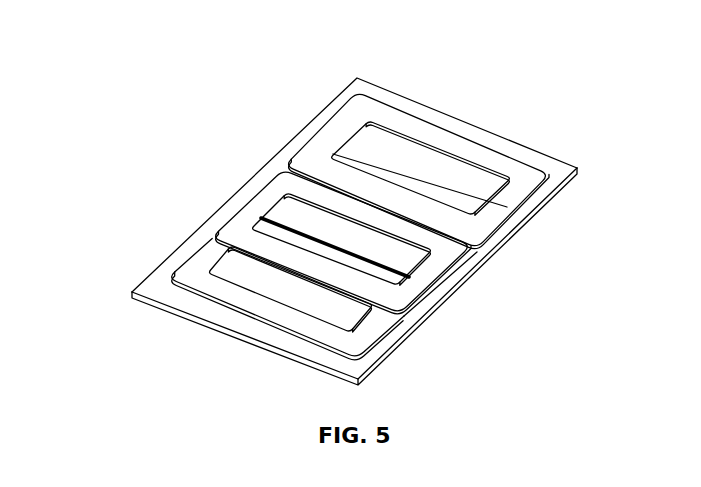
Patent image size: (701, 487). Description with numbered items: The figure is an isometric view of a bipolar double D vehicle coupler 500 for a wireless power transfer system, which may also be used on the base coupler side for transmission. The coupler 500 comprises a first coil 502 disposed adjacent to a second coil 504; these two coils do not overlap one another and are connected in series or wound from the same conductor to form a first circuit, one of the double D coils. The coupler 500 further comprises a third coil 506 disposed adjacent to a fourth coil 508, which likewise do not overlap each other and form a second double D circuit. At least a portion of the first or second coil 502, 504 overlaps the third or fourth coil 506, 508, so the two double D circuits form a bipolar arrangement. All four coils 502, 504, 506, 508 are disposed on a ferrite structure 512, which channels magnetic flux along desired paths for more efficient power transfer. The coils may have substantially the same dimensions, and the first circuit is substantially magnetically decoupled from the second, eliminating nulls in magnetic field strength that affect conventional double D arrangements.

The bipolar double D vehicle coupler 500 is at (136, 45).
The first coil 502 is at (532, 182).
The second coil 504 is at (248, 208).
The third coil 506 is at (346, 155).
The fourth coil 508 is at (198, 263).
The ferrite structure 512 is at (357, 87).